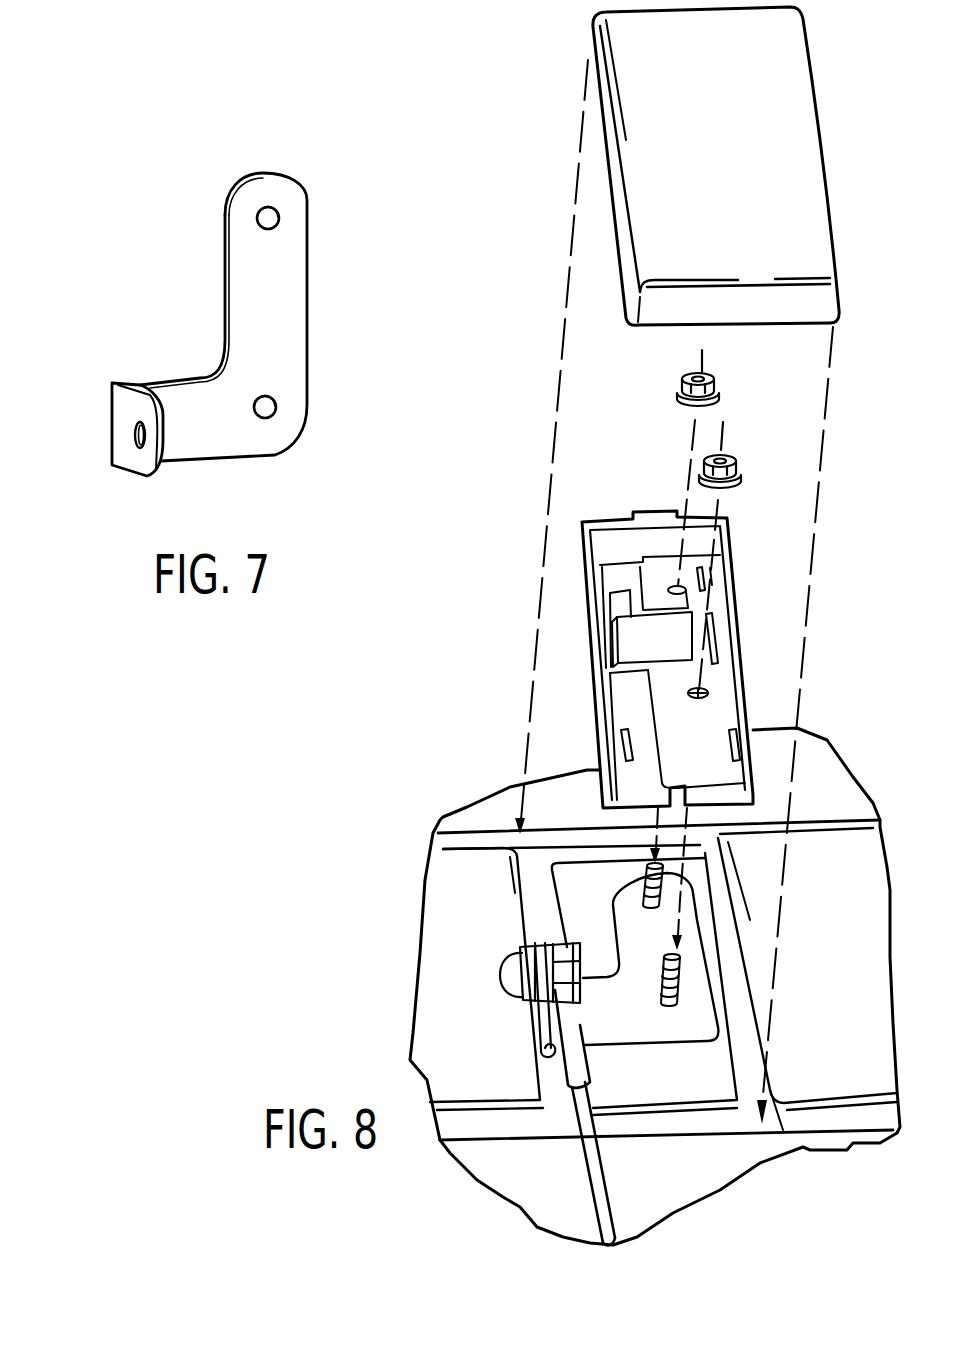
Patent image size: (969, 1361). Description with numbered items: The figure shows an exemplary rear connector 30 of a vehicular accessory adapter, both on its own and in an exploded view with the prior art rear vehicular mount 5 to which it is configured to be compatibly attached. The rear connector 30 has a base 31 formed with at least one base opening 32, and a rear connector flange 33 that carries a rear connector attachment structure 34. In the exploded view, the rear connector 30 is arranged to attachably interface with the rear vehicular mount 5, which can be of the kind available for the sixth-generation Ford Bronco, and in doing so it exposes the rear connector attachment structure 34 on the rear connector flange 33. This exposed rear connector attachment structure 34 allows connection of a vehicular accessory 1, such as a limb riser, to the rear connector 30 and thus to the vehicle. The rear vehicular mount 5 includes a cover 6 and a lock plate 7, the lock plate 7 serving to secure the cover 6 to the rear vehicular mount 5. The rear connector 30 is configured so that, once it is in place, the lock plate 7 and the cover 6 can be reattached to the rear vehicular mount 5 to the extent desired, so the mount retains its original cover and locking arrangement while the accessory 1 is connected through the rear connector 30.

In FIG. 8, the vehicular accessory 1 is at (595, 1178).
In FIG. 8, the rear vehicular mount 5 is at (643, 1097).
In FIG. 8, the cover 6 is at (807, 176).
In FIG. 8, the lock plate 7 is at (737, 595).
In FIG. 7, the rear connector 30 is at (101, 211).
In FIG. 8, the rear connector 30 is at (664, 1032).
In FIG. 7, the base 31 is at (282, 305).
In FIG. 7, the base opening 32 is at (278, 217).
In FIG. 7, the rear connector flange 33 is at (160, 428).
In FIG. 8, the rear connector flange 33 is at (538, 1023).
In FIG. 7, the rear connector attachment structure 34 is at (132, 437).